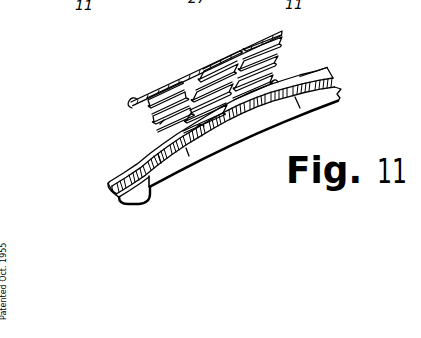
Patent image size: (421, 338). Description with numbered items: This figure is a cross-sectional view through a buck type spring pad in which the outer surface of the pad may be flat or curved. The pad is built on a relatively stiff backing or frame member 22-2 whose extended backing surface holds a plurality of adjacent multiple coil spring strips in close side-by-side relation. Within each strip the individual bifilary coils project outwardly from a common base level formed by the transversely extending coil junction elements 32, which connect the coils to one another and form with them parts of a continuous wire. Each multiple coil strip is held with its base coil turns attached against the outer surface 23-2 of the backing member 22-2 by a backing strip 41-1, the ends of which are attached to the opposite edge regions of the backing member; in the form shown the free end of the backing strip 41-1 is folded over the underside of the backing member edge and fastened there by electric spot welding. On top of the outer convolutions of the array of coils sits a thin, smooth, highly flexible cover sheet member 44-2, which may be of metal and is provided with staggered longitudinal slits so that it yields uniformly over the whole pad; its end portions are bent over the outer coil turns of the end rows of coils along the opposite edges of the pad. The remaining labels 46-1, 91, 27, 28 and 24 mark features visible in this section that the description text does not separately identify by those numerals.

The cover sheet member 44-2 is at (151, 91).
The coil junction elements 32 is at (202, 62).
The spring loop 46-1 is at (134, 109).
The spring end 91 is at (163, 121).
The outer surface of backing member 23-2 is at (328, 68).
The backing member 22-2 is at (295, 97).
The cap 27 is at (112, 195).
The lip 28 is at (132, 190).
The backing strip 41-1 is at (158, 152).
The member 24 is at (186, 148).